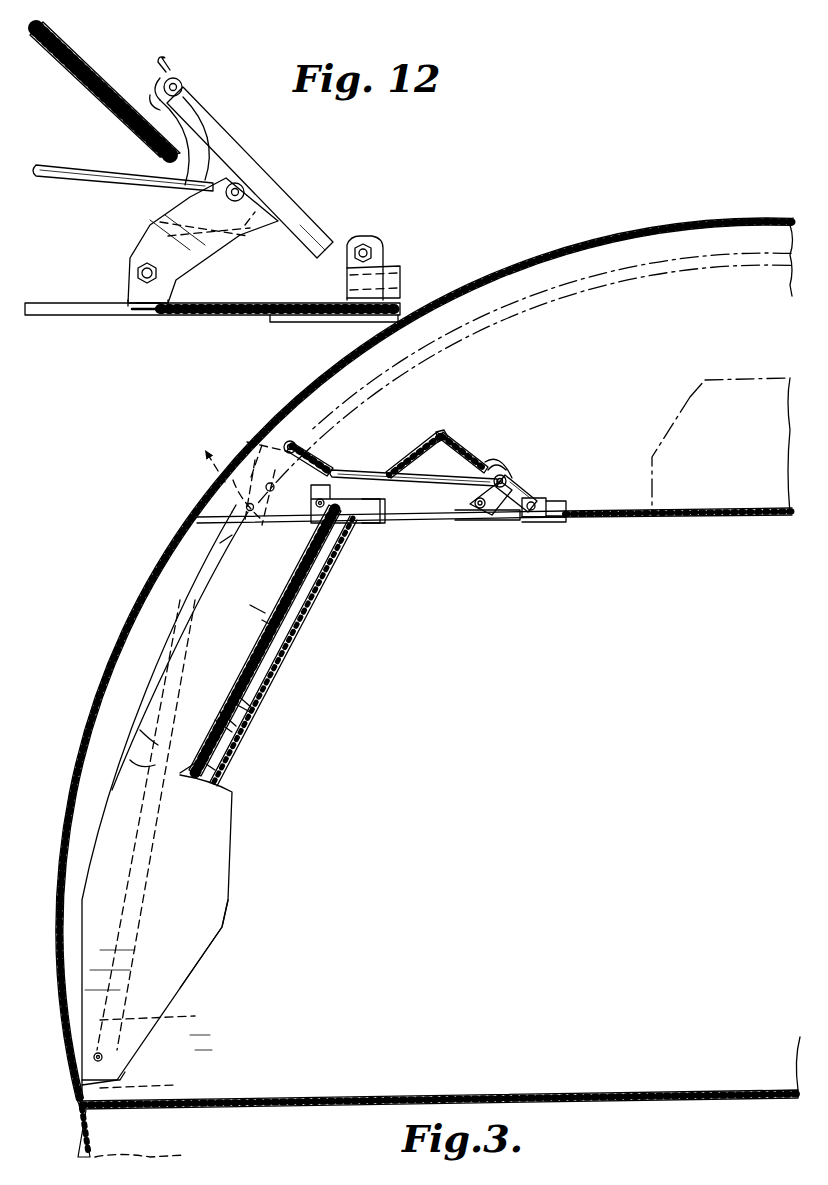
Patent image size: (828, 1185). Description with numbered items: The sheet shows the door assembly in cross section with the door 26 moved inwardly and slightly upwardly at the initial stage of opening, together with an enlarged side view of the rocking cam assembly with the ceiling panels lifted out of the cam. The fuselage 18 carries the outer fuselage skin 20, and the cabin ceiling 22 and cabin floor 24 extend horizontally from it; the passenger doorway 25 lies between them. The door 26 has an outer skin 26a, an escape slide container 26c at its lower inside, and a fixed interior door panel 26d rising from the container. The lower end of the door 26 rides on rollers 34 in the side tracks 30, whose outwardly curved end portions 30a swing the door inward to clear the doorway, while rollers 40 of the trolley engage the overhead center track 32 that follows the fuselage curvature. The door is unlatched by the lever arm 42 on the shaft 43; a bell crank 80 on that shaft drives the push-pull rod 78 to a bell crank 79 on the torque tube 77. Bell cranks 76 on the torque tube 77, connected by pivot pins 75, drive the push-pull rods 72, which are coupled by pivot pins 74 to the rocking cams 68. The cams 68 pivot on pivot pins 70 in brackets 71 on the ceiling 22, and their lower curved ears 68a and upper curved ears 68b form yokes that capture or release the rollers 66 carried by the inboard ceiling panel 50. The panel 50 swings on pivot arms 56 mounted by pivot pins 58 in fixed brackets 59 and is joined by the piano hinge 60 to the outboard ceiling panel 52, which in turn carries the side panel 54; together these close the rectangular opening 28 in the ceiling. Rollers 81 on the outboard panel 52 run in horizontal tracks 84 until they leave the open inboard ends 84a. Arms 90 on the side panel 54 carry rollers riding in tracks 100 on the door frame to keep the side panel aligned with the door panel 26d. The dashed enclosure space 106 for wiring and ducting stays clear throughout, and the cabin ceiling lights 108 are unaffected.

In FIG. 3, the fuselage 18 is at (560, 240).
In FIG. 3, the outer fuselage skin 20 is at (292, 410).
In FIG. 12, the cabin ceiling 22 is at (242, 315).
In FIG. 3, the cabin ceiling 22 is at (668, 517).
In FIG. 3, the cabin floor 24 is at (483, 1092).
In FIG. 3, the passenger doorway 25 is at (68, 812).
In FIG. 3, the door 26 is at (240, 853).
In FIG. 3, the outer skin 26a is at (125, 725).
In FIG. 3, the escape slide container 26c is at (224, 927).
In FIG. 3, the interior door panel 26d is at (258, 667).
In FIG. 3, the rectangular opening 28 is at (488, 522).
In FIG. 3, the side tracks 30 is at (159, 1016).
In FIG. 3, the outwardly curved end portions 30a is at (153, 1086).
In FIG. 3, the overhead center track 32 is at (508, 318).
In FIG. 3, the rollers 34 is at (104, 1058).
In FIG. 3, the rollers 40 is at (203, 450).
In FIG. 3, the lever arm 42 is at (250, 706).
In FIG. 3, the shaft 43 is at (205, 763).
In FIG. 12, the inboard ceiling panel 50 is at (82, 68).
In FIG. 3, the inboard ceiling panel 50 is at (466, 448).
In FIG. 3, the outboard ceiling panel 52 is at (436, 440).
In FIG. 3, the side panel 54 is at (287, 575).
In FIG. 12, the pivot arms 56 is at (286, 206).
In FIG. 3, the pivot arms 56 is at (522, 490).
In FIG. 12, the pivot pins 58 is at (370, 244).
In FIG. 3, the pivot pins 58 is at (546, 500).
In FIG. 12, the fixed brackets 59 is at (384, 282).
In FIG. 3, the fixed brackets 59 is at (560, 516).
In FIG. 3, the piano hinge 60 is at (444, 432).
In FIG. 12, the rollers 66 is at (186, 86).
In FIG. 3, the rollers 66 is at (503, 472).
In FIG. 12, the rocking cams 68 is at (130, 231).
In FIG. 3, the rocking cams 68 is at (515, 512).
In FIG. 12, the lower curved ears 68a is at (163, 72).
In FIG. 12, the upper curved ears 68b is at (246, 226).
In FIG. 12, the pivot pins 70 is at (164, 273).
In FIG. 3, the pivot pins 70 is at (478, 512).
In FIG. 12, the brackets 71 is at (132, 301).
In FIG. 12, the push-pull rods 72 is at (60, 166).
In FIG. 3, the push-pull rods 72 is at (370, 476).
In FIG. 12, the pivot pins 74 is at (239, 183).
In FIG. 3, the pivot pins 75 is at (275, 485).
In FIG. 3, the bell cranks 76 is at (332, 468).
In FIG. 3, the torque tube 77 is at (283, 444).
In FIG. 3, the push-pull rod 78 is at (197, 519).
In FIG. 3, the bell crank 79 is at (262, 462).
In FIG. 3, the bell crank 80 is at (120, 680).
In FIG. 3, the rollers 81 is at (323, 505).
In FIG. 3, the horizontal tracks 84 is at (345, 523).
In FIG. 3, the inboard ends 84a is at (372, 523).
In FIG. 3, the arms 90 is at (270, 618).
In FIG. 3, the tracks 100 is at (224, 727).
In FIG. 3, the enclosure space 106 is at (688, 396).
In FIG. 12, the cabin ceiling lights 108 is at (322, 322).
In FIG. 3, the cabin ceiling lights 108 is at (550, 522).